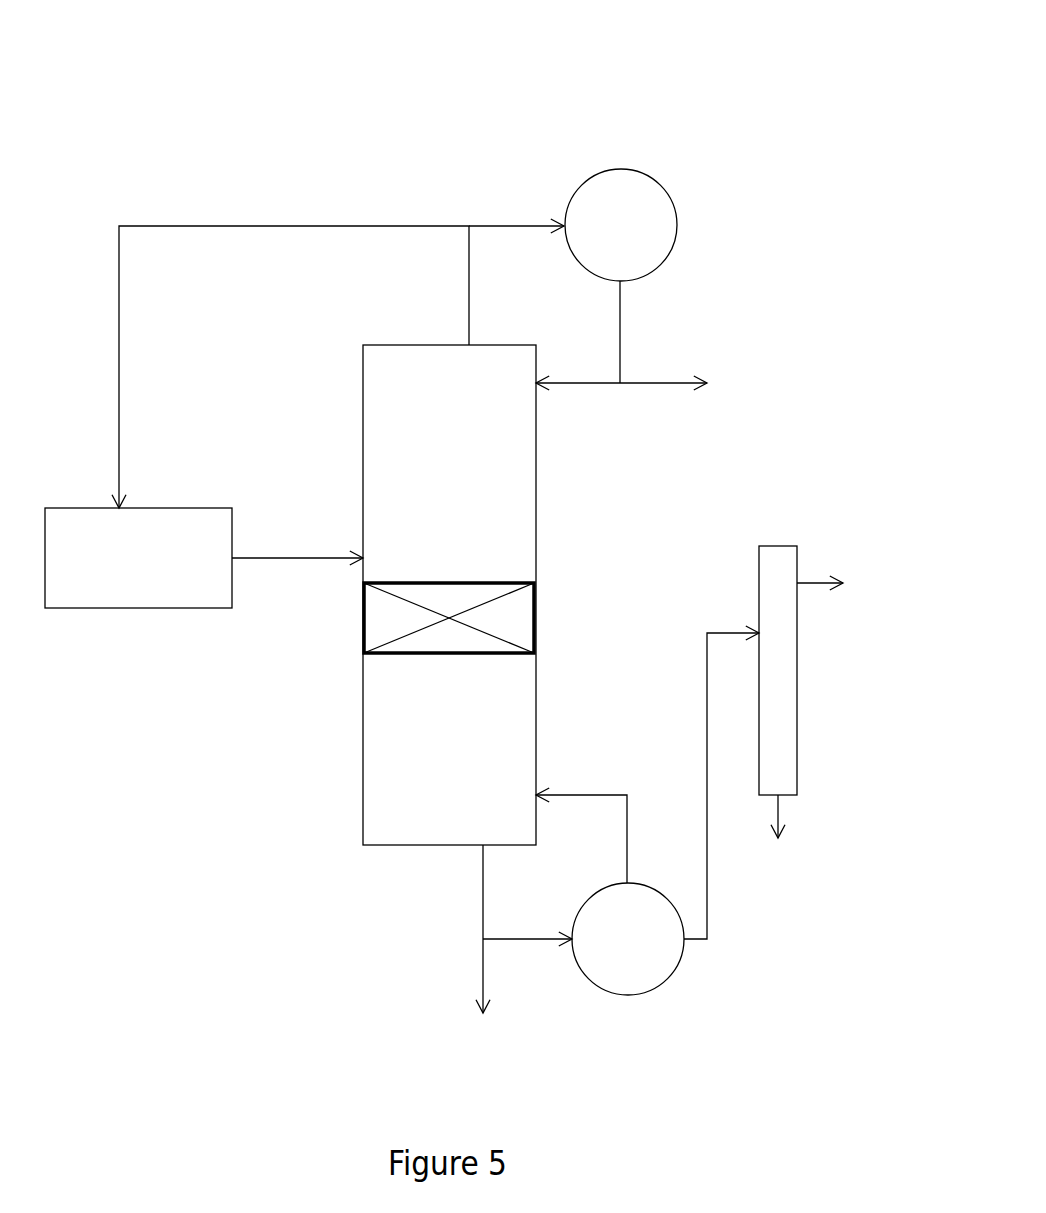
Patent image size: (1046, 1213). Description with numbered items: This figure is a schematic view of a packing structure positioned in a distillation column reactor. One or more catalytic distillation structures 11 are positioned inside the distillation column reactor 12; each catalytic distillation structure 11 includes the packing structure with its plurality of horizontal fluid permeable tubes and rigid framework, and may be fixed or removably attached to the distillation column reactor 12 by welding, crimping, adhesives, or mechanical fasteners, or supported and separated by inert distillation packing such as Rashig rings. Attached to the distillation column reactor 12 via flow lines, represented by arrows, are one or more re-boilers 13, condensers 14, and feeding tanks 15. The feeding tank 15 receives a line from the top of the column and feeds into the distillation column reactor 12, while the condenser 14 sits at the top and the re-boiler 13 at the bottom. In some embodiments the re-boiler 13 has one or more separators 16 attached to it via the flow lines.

The catalytic distillation structure 11 is at (378, 614).
The distillation column reactor 12 is at (401, 830).
The re-boiler 13 is at (650, 960).
The condenser 14 is at (632, 200).
The feeding tank 15 is at (115, 572).
The separator 16 is at (783, 689).